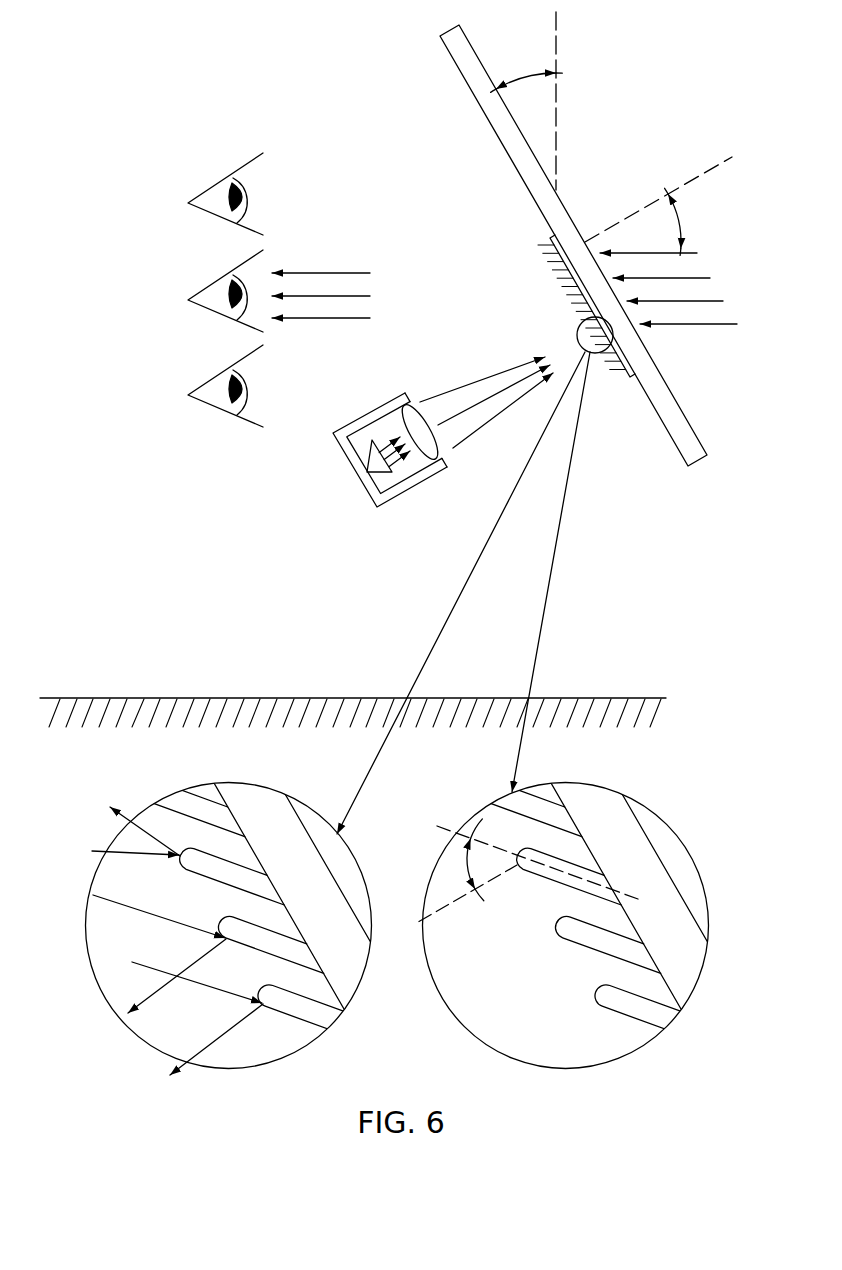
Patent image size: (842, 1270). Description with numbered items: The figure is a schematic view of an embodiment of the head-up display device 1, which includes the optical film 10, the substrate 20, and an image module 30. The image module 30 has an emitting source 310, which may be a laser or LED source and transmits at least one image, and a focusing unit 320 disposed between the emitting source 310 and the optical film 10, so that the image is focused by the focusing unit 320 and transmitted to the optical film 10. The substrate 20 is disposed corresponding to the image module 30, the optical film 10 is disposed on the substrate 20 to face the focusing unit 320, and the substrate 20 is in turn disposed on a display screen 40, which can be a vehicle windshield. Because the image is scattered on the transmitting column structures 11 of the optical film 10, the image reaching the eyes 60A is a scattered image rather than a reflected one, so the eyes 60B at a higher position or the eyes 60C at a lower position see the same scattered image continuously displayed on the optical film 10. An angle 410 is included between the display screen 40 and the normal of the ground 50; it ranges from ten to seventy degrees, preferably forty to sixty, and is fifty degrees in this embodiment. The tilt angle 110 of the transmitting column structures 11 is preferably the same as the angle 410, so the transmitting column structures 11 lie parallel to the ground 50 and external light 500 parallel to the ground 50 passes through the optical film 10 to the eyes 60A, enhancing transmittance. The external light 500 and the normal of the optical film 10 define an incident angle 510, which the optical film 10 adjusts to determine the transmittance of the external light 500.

The head-up display device 1 is at (150, 94).
The optical film 10 is at (603, 379).
The transmitting column structures 11 is at (604, 1000).
The tilt angle 110 is at (528, 870).
The substrate 20 is at (628, 373).
The image module 30 is at (437, 459).
The emitting source 310 is at (370, 465).
The focusing unit 320 is at (433, 457).
The display screen 40 is at (458, 50).
The angle 410 is at (527, 101).
The ground 50 is at (117, 697).
The external light 500 is at (516, 284).
The incident angle 510 is at (658, 206).
The eyes 60A is at (208, 282).
The eyes at higher position 60B is at (208, 187).
The eyes at lower position 60C is at (208, 377).